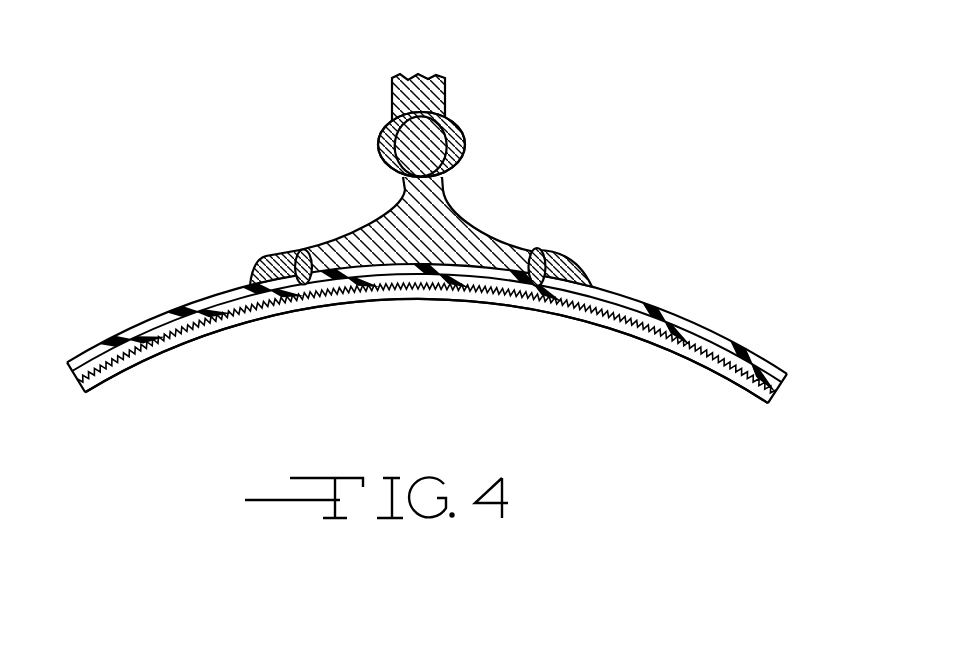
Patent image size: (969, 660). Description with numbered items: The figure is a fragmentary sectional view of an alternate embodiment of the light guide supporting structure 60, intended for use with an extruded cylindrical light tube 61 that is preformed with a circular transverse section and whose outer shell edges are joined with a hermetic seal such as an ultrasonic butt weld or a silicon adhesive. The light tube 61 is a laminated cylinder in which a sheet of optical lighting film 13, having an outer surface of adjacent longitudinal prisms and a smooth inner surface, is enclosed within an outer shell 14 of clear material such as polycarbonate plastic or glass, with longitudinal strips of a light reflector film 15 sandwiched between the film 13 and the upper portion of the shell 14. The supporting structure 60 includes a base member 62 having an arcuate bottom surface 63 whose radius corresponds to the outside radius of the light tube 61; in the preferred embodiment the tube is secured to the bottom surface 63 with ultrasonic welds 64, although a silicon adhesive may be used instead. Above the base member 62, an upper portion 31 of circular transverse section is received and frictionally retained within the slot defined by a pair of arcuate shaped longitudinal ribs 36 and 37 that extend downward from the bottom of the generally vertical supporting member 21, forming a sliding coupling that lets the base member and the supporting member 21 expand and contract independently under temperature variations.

The optical lighting film 13 is at (673, 343).
The outer shell 14 is at (768, 363).
The light reflector film 15 is at (747, 387).
The supporting member 21 is at (440, 92).
The upper portion 31 is at (415, 130).
The arcuate shaped longitudinal rib 36 is at (378, 137).
The arcuate shaped longitudinal rib 37 is at (453, 125).
The supporting structure 60 is at (458, 160).
The light tube 61 is at (465, 355).
The base member 62 is at (490, 237).
The arcuate bottom surface 63 is at (593, 287).
The ultrasonic welds 64 is at (303, 250).